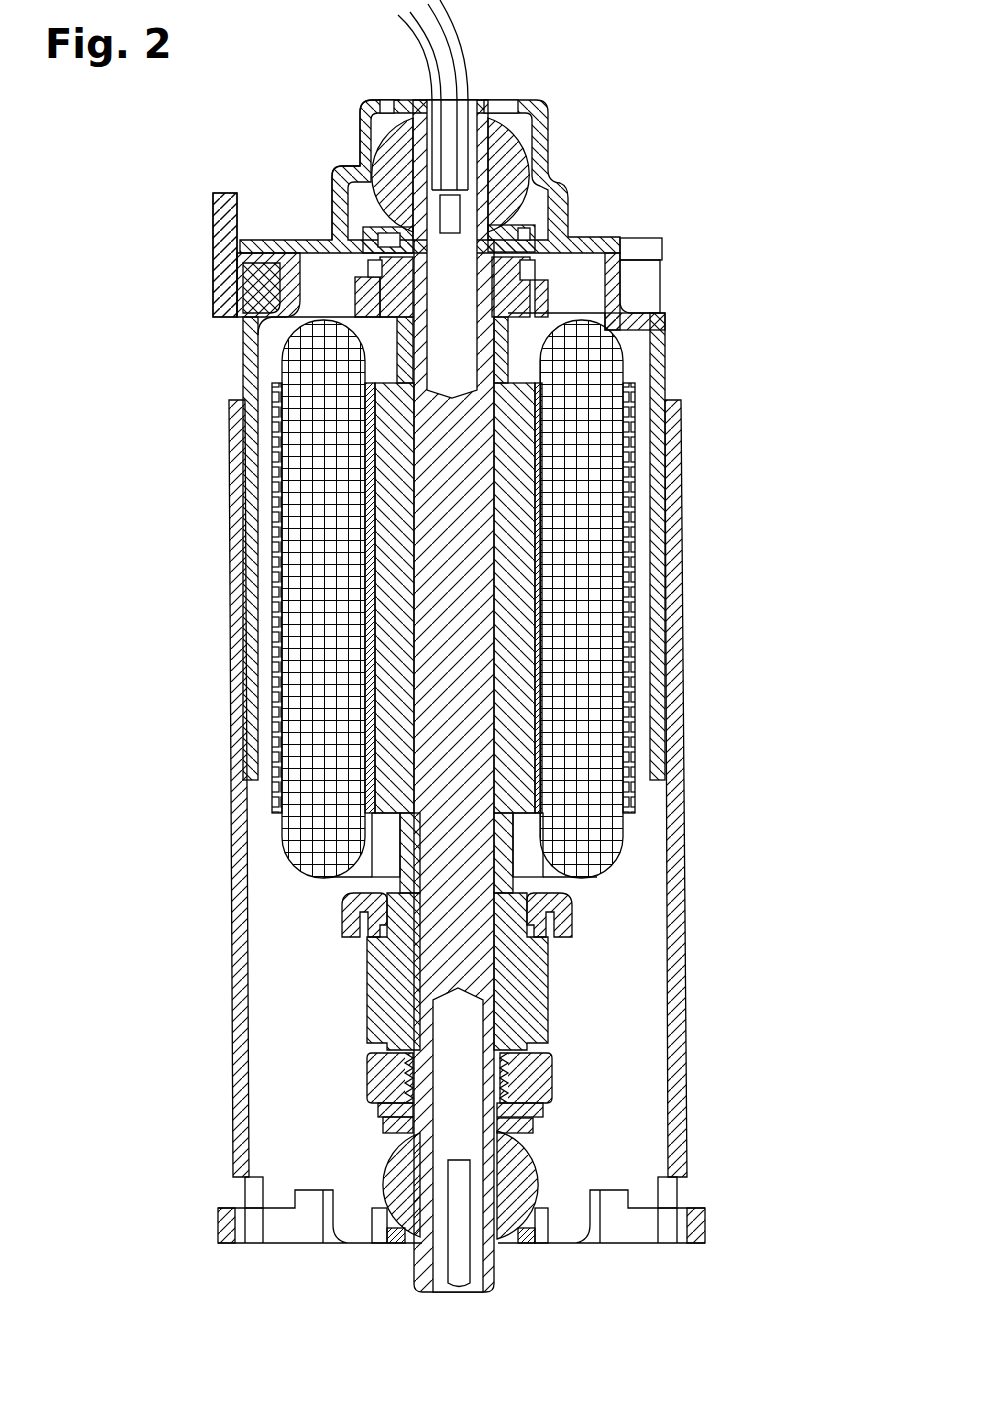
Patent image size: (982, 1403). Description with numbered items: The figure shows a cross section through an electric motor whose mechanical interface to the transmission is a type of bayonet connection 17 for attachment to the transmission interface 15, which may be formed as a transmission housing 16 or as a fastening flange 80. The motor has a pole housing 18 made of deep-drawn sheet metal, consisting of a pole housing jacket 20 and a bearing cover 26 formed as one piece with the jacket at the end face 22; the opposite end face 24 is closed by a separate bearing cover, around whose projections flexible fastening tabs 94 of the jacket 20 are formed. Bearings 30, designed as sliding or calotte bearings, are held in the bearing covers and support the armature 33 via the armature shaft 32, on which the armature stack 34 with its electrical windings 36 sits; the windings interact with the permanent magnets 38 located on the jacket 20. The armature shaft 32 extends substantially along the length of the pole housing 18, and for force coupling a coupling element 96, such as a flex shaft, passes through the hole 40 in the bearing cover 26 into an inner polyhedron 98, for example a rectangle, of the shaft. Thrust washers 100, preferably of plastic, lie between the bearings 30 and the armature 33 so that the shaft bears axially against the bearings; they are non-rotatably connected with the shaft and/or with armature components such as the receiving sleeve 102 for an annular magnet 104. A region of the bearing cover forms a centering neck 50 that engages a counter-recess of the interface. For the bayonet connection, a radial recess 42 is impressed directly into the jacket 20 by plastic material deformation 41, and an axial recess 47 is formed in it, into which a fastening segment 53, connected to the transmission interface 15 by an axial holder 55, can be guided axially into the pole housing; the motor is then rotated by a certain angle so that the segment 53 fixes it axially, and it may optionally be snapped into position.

The transmission interface 15 is at (225, 255).
The transmission housing 16 is at (149, 218).
The bayonet connection 17 is at (192, 301).
The pole housing 18 is at (518, 788).
The pole housing jacket 20 is at (672, 580).
The end face 22 is at (253, 308).
The end face 24 is at (252, 1245).
The bearing cover 26 is at (340, 220).
The bearing 30 is at (512, 150).
The armature shaft 32 is at (445, 938).
The armature 33 is at (287, 877).
The armature stack 34 is at (401, 595).
The electrical windings 36 is at (300, 358).
The permanent magnets 38 is at (248, 552).
The hole 40 is at (495, 102).
The plastic material deformation 41 is at (634, 295).
The radial recess 42 is at (215, 217).
The axial recess 47 is at (652, 250).
The centering neck 50 is at (336, 158).
The fastening segment 53 is at (250, 283).
The axial holder 55 is at (222, 218).
The fastening flange 80 is at (225, 255).
The flexible fastening tabs 94 is at (218, 1228).
The coupling element 96 is at (440, 53).
The inner polyhedron 98 is at (465, 212).
The thrust washers 100 is at (560, 230).
The receiving sleeve 102 is at (375, 1107).
The annular magnet 104 is at (535, 1082).